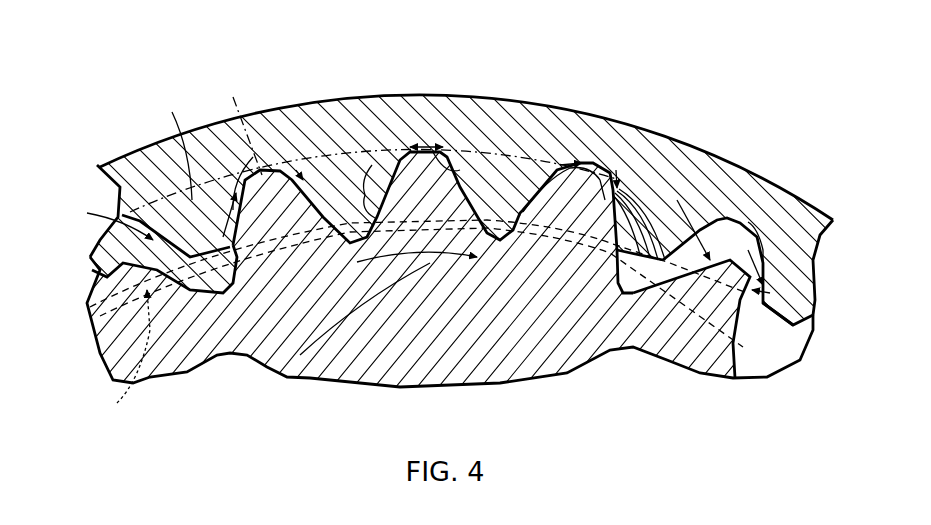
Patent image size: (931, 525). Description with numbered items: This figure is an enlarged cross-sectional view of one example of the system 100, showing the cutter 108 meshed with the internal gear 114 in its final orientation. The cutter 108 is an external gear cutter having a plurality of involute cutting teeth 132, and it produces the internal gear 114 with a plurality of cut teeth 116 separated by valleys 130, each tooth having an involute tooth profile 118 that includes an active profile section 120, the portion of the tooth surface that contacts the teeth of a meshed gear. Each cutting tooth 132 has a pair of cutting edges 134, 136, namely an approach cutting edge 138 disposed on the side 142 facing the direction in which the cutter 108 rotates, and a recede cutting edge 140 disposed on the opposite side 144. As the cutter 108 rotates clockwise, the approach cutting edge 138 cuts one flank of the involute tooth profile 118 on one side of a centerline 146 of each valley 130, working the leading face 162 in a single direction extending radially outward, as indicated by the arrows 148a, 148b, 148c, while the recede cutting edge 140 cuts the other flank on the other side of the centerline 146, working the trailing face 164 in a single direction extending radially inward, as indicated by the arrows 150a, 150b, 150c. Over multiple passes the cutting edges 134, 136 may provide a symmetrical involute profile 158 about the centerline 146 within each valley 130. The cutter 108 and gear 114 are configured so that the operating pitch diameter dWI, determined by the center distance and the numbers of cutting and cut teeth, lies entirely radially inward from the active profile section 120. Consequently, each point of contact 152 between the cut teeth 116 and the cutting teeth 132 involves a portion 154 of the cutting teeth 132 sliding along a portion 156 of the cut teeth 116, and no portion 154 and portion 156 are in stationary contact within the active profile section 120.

The system 100 is at (83, 108).
The cutter 108 is at (120, 358).
The internal gear in final orientation 114 is at (158, 140).
The cut teeth 116 is at (310, 255).
The involute tooth profile 118 is at (140, 232).
The active profile section 120 is at (353, 155).
The valleys 130 is at (133, 213).
The involute cutting teeth 132 is at (619, 180).
The cutting edge 134 is at (117, 290).
The cutting edge 136 is at (135, 262).
The approach cutting edge 138 is at (232, 192).
The recede cutting edge 140 is at (688, 428).
The side of cutting tooth 142 is at (677, 200).
The side of cutting tooth 144 is at (780, 313).
The centerline 146 is at (253, 157).
The arrow 148a is at (176, 144).
The arrow 148b is at (373, 167).
The arrow 148c is at (497, 288).
The arrow 150a is at (443, 148).
The arrow 150b is at (520, 230).
The arrow 150c is at (787, 295).
The point of contact 152 is at (200, 340).
The portion of cutting teeth 154 is at (673, 290).
The portion of cut teeth 156 is at (615, 240).
The symmetrical involute profile 158 is at (323, 167).
The leading face 162 is at (425, 143).
The trailing face 164 is at (437, 145).
The operating pitch diameter dWI is at (130, 396).